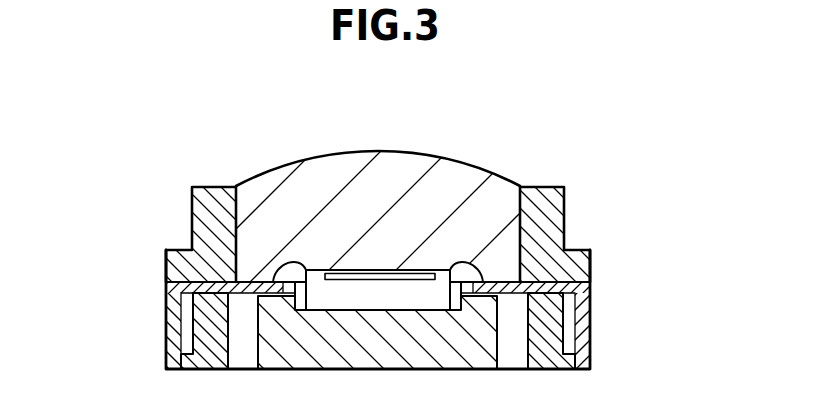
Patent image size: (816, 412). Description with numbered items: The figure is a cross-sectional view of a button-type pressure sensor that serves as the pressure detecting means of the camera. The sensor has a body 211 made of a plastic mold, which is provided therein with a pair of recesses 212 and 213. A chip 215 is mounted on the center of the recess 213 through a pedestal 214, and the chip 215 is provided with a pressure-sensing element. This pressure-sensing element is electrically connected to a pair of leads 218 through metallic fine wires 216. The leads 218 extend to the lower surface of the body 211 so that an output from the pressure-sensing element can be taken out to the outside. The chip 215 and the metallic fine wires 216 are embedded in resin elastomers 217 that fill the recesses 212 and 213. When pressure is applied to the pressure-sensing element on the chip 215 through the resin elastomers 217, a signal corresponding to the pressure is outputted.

The body 211 is at (553, 220).
The recess 212 is at (240, 192).
The recess 213 is at (300, 294).
The pedestal 214 is at (386, 300).
The chip 215 is at (413, 273).
The metallic fine wires 216 is at (300, 262).
The resin elastomers 217 is at (407, 165).
The leads 218 is at (185, 329).